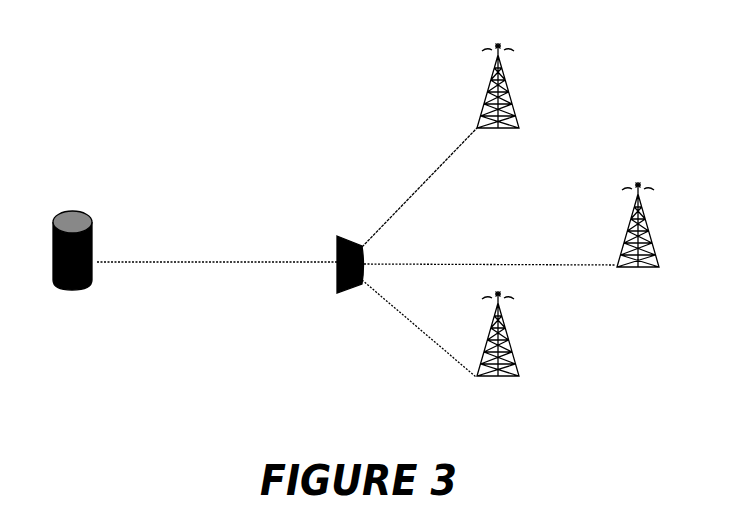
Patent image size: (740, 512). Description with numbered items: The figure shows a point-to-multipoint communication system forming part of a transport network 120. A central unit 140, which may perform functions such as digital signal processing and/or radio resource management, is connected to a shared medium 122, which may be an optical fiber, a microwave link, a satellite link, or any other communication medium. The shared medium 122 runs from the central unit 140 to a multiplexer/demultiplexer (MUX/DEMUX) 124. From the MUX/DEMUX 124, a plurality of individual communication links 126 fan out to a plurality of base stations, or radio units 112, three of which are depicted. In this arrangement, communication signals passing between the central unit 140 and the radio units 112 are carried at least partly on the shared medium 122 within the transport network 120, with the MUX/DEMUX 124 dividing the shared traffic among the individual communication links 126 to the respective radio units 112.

The radio units 112 is at (483, 98).
The transport network 120 is at (270, 159).
The shared medium 122 is at (263, 264).
The multiplexer/demultiplexer (MUX/DEMUX) 124 is at (343, 294).
The individual communication links 126 is at (447, 157).
The central unit 140 is at (80, 284).